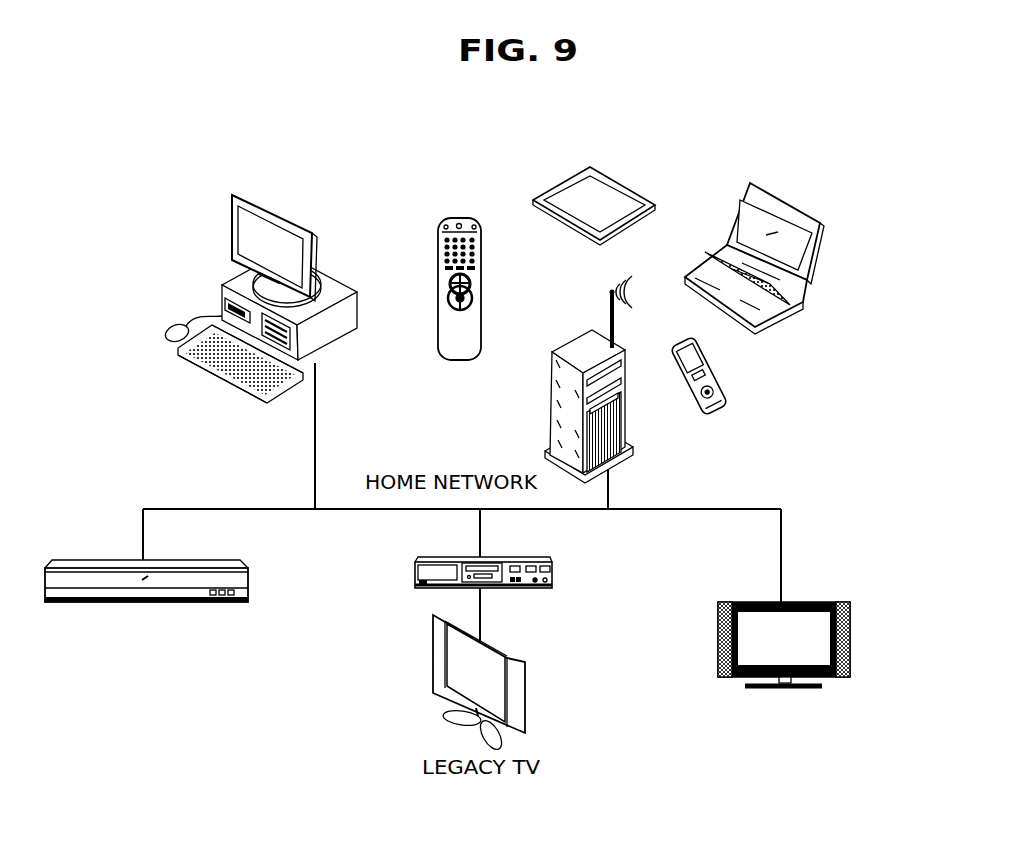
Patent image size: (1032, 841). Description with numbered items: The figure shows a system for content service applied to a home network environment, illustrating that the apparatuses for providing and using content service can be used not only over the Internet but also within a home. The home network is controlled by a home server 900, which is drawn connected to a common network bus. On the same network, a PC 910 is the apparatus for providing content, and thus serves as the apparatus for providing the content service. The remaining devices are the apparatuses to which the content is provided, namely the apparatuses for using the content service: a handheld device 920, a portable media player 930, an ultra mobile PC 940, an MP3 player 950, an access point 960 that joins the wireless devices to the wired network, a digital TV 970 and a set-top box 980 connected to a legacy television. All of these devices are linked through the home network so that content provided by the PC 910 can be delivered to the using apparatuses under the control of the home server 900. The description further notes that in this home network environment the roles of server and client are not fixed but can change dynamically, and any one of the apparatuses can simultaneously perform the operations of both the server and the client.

The home server 900 is at (250, 581).
The PC 910 is at (222, 272).
The apparatus for using content service 920 is at (460, 212).
The apparatus for using content service 930 is at (640, 190).
The apparatus for using content service 940 is at (816, 268).
The apparatus for using content service 950 is at (730, 391).
The apparatus for using content service 960 is at (628, 432).
The apparatus for using content service 970 is at (850, 667).
The apparatus for using content service 980 is at (537, 595).